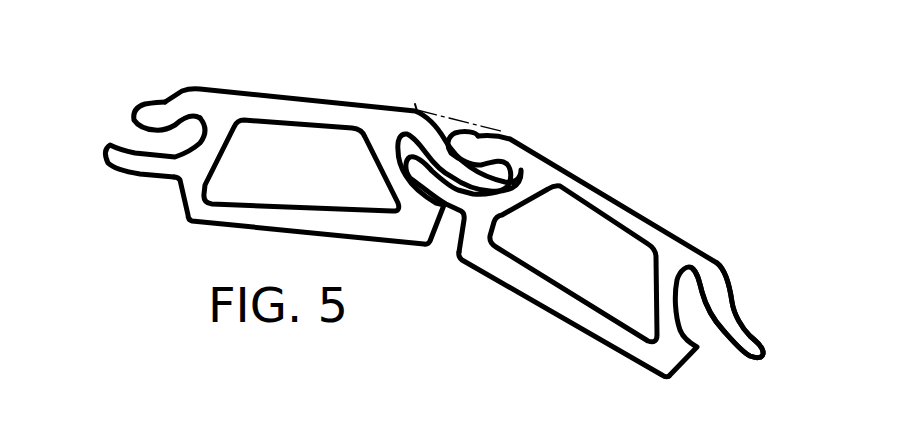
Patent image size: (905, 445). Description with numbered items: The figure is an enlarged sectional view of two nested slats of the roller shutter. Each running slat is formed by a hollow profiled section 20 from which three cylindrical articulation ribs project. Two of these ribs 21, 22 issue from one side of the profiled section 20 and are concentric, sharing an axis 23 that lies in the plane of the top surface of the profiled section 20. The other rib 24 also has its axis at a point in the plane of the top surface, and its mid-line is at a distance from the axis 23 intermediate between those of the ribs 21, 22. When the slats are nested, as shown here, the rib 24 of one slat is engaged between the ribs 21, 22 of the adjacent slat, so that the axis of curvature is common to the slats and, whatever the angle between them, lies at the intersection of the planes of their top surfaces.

The hollow profiled section 20 is at (602, 325).
The articulation rib 21 is at (160, 117).
The articulation rib 22 is at (140, 165).
The axis 23 is at (484, 118).
The articulation rib 24 is at (742, 335).